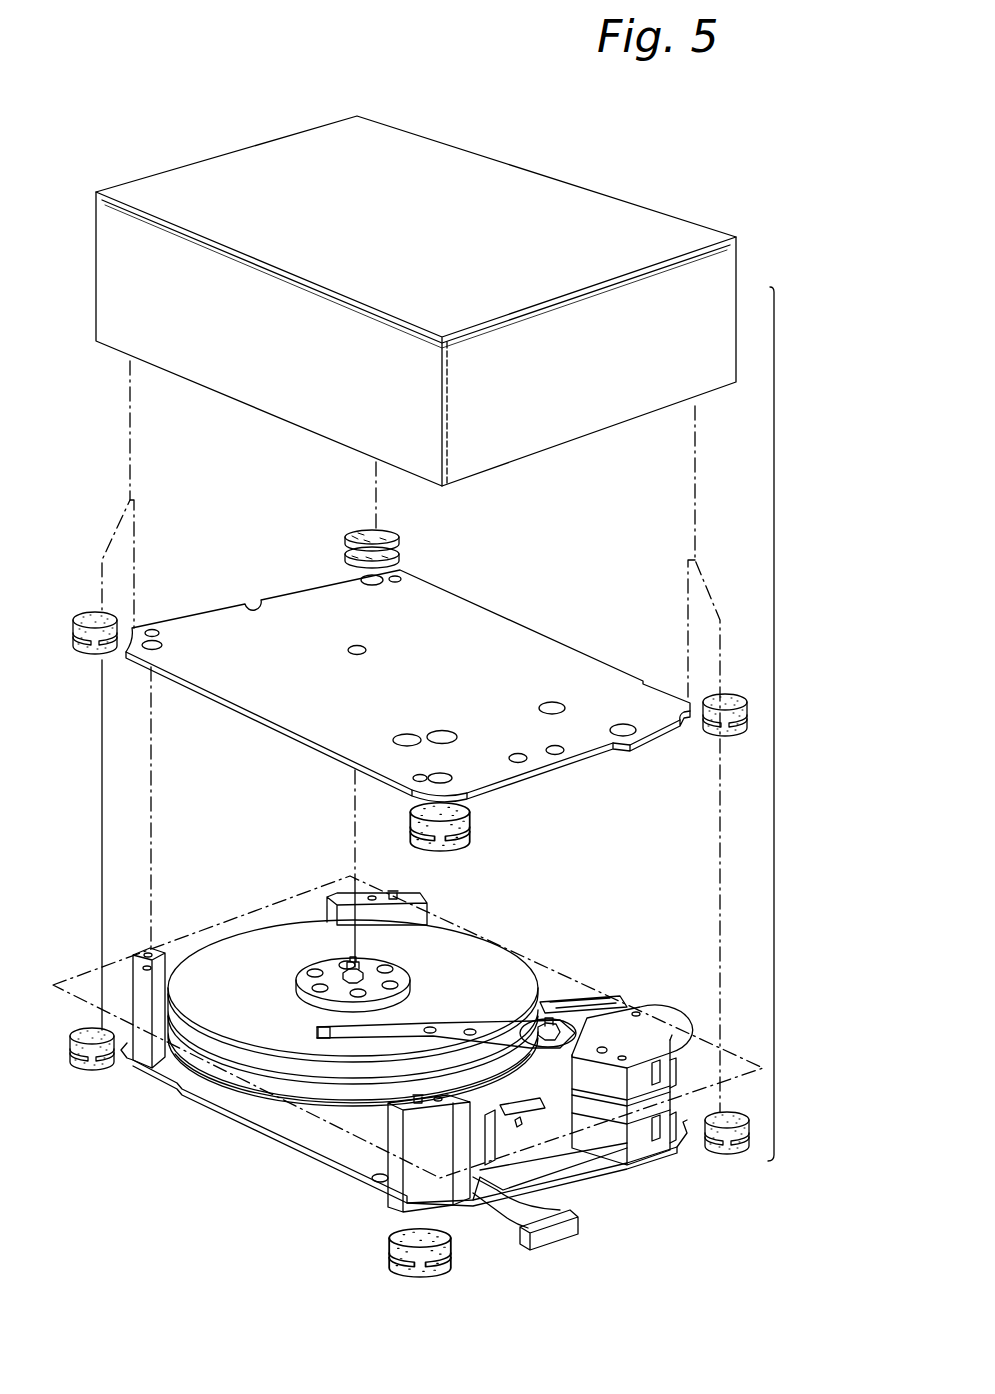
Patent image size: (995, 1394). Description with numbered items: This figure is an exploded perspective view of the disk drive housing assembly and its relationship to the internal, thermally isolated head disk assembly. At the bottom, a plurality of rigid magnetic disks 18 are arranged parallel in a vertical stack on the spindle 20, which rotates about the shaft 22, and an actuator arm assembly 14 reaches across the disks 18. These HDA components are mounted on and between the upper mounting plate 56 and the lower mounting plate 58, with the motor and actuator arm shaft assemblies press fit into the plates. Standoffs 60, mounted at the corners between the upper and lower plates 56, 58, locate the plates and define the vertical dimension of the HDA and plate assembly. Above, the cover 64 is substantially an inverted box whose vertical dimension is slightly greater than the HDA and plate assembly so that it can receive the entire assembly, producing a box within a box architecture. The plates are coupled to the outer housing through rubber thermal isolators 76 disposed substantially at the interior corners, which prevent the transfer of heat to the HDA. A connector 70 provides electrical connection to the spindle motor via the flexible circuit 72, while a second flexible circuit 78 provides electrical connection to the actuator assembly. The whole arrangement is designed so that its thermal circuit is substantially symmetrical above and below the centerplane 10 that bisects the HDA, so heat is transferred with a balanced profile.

The centerplane 10 is at (737, 1053).
The actuator arm assembly 14 is at (630, 998).
The magnetic disks 18 is at (493, 955).
The spindle 20 is at (410, 975).
The shaft 22 is at (358, 965).
The upper mounting plate 56 is at (540, 640).
The lower mounting plate 58 is at (293, 1142).
The standoffs 60 is at (140, 963).
The cover 64 is at (692, 223).
The connector 70 is at (568, 1208).
The flexible circuit 72 is at (518, 1222).
The thermal isolators 76 is at (398, 540).
The second flexible circuit 78 is at (560, 1137).